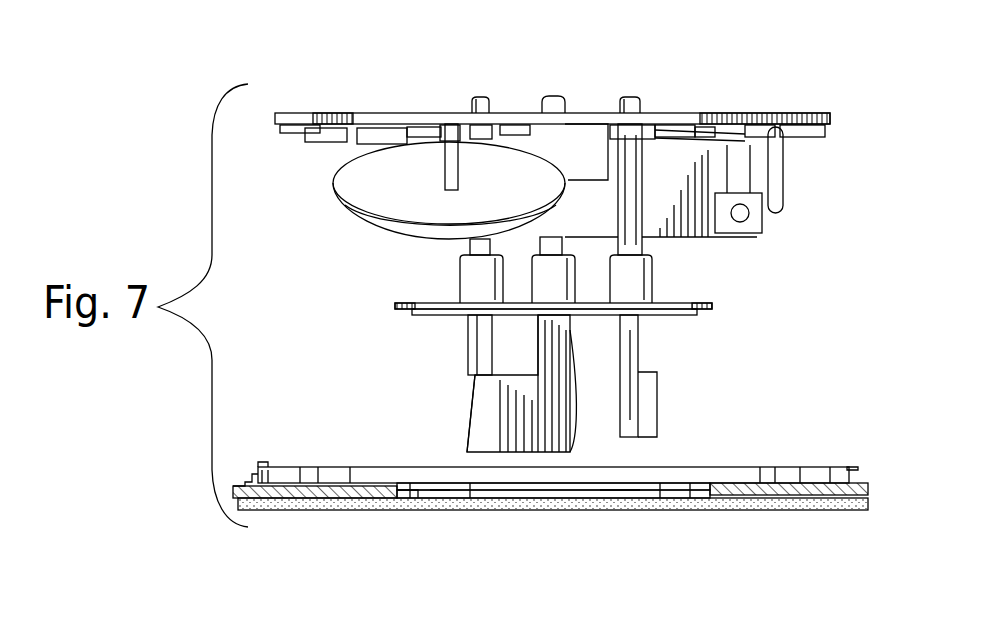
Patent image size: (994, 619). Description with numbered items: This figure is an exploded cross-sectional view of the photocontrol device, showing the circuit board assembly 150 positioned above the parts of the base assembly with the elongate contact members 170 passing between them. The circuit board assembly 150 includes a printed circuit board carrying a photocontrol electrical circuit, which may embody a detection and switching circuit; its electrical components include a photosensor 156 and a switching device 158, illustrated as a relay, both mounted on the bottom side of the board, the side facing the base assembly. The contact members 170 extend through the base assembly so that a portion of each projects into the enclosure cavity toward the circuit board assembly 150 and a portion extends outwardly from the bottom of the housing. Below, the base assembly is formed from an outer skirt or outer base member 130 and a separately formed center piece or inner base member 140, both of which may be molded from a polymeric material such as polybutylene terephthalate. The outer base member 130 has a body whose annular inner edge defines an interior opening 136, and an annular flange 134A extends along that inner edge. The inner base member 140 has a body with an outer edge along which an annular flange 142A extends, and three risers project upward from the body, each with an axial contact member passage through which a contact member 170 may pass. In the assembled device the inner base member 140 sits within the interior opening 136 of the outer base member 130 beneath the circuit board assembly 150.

The circuit board assembly 150 is at (566, 238).
The switching device 158 is at (668, 168).
The photosensor 156 is at (762, 222).
The annular flange 142A is at (707, 300).
The inner base member 140 is at (606, 298).
The elongate contact members 170 is at (480, 348).
The interior opening 136 is at (464, 516).
The annular flange 134A is at (703, 497).
The outer base member 130 is at (550, 510).